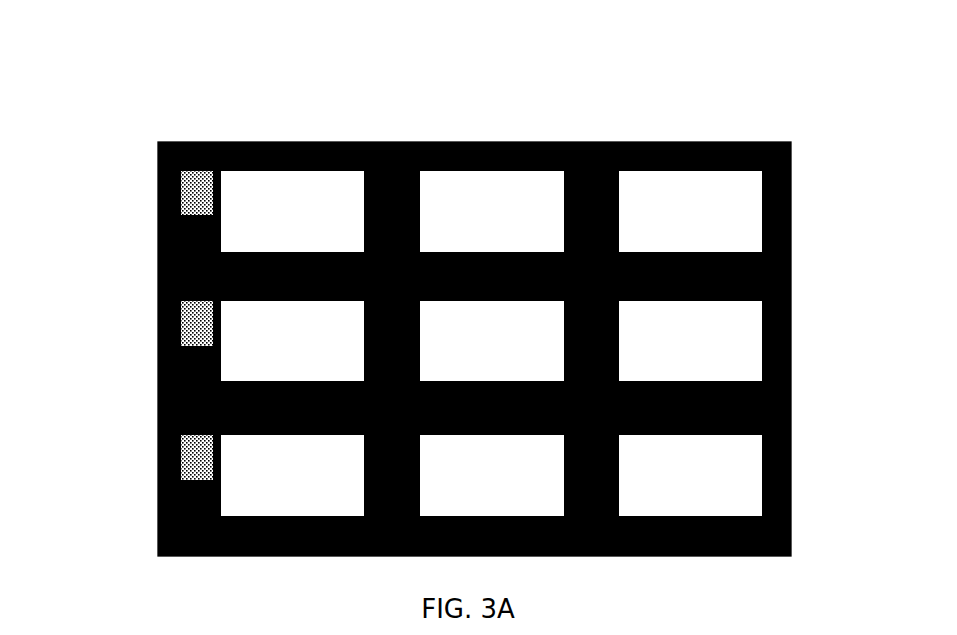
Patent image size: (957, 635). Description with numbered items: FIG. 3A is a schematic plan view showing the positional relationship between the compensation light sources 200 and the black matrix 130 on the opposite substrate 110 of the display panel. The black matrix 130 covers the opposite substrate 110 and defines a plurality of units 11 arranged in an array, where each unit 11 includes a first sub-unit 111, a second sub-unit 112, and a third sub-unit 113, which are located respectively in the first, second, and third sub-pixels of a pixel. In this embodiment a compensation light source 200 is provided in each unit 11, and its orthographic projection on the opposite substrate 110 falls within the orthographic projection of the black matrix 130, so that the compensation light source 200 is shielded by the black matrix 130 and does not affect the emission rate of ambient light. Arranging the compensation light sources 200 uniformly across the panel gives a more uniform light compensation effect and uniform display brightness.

The opposite substrate 110 is at (152, 118).
The black matrix 130 is at (783, 265).
The unit 11 is at (491, 140).
The first sub-unit 111 is at (266, 177).
The second sub-unit 112 is at (477, 178).
The third sub-unit 113 is at (690, 168).
The compensation light source 200 is at (187, 188).